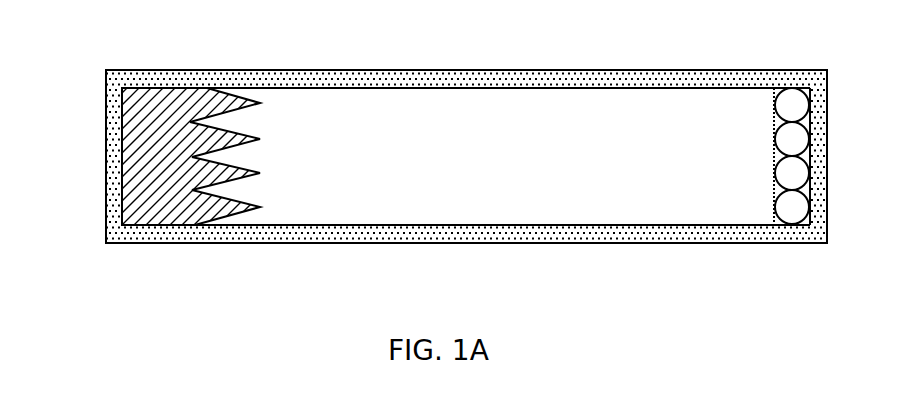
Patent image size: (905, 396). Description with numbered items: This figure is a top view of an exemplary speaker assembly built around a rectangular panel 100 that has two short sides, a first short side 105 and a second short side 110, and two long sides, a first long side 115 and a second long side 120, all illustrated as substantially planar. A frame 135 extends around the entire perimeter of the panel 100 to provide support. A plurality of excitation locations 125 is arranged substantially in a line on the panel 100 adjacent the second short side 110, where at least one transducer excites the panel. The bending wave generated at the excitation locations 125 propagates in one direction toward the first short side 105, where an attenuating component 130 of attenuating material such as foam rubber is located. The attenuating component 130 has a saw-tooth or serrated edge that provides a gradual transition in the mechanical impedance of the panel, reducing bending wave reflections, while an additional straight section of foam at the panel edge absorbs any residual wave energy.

The panel 100 is at (433, 163).
The first short side 105 is at (122, 177).
The second short side 110 is at (812, 157).
The first long side 115 is at (240, 88).
The second long side 120 is at (698, 225).
The excitation locations 125 is at (795, 212).
The attenuating component 130 is at (165, 212).
The frame 135 is at (588, 243).